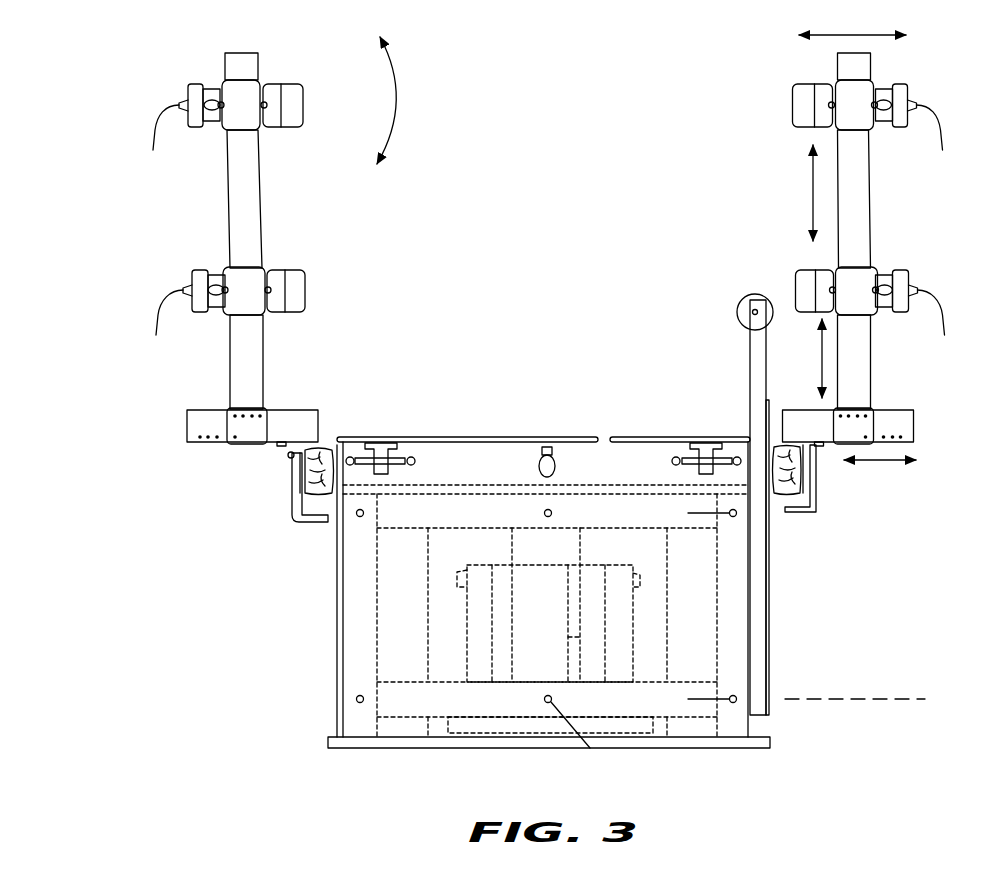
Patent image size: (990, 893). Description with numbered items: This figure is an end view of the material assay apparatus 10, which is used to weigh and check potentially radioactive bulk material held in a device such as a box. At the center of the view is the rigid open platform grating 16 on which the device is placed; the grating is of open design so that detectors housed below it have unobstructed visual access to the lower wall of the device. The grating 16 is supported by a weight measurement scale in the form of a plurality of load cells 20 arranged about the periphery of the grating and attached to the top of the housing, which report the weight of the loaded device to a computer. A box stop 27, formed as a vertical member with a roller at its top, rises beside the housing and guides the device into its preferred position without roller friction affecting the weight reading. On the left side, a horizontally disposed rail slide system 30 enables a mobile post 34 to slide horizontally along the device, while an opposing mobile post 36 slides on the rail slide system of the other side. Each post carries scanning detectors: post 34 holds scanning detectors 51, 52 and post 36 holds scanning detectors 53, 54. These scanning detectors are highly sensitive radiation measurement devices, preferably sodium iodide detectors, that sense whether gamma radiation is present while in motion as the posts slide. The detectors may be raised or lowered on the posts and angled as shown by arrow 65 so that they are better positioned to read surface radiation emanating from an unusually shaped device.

The material assay apparatus 10 is at (586, 212).
The platform grating 16 is at (481, 434).
The load cells 20 is at (403, 455).
The box stop 27 is at (748, 348).
The rail slide system 30 is at (289, 505).
The mobile post 34 is at (261, 249).
The mobile post 36 is at (840, 247).
The scanning detector 51 is at (311, 289).
The scanning detector 52 is at (318, 121).
The scanning detector 53 is at (793, 289).
The scanning detector 54 is at (784, 118).
The arrow 65 is at (415, 100).